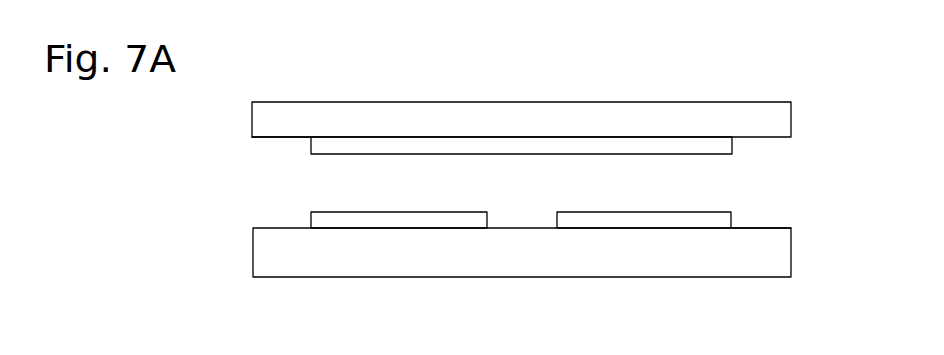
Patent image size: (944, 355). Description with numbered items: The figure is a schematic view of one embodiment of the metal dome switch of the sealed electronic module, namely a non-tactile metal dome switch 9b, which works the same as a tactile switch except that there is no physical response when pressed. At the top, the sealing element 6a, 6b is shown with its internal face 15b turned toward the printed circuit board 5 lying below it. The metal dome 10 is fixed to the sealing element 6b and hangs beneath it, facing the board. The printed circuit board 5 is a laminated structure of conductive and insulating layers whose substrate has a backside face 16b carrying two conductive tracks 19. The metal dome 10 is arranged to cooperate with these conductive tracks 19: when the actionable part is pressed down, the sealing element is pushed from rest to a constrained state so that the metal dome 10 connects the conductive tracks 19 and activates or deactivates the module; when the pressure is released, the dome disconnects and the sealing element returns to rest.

The sealing element 6a is at (521, 90).
The sealing element 6b is at (728, 115).
The metal dome 10 is at (494, 147).
The internal face 15b is at (283, 137).
The non-tactile metal dome switch 9b is at (756, 211).
The backside face 16b is at (758, 228).
The conductive tracks 19 is at (343, 222).
The printed circuit board 5 is at (684, 247).